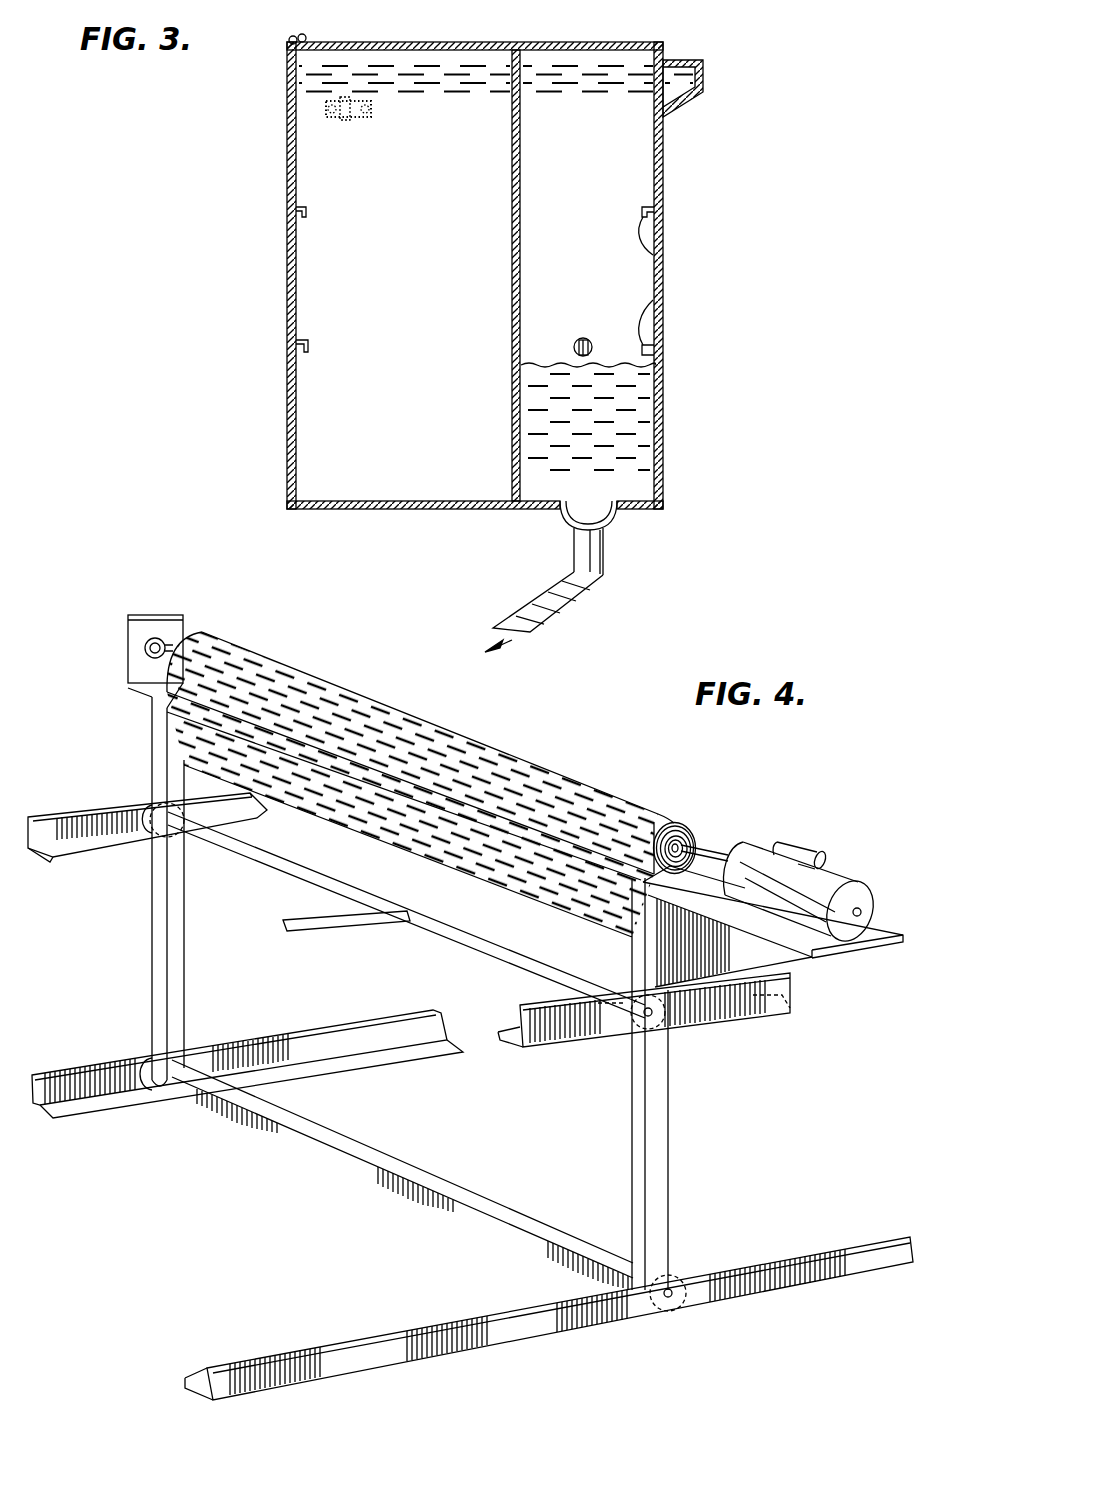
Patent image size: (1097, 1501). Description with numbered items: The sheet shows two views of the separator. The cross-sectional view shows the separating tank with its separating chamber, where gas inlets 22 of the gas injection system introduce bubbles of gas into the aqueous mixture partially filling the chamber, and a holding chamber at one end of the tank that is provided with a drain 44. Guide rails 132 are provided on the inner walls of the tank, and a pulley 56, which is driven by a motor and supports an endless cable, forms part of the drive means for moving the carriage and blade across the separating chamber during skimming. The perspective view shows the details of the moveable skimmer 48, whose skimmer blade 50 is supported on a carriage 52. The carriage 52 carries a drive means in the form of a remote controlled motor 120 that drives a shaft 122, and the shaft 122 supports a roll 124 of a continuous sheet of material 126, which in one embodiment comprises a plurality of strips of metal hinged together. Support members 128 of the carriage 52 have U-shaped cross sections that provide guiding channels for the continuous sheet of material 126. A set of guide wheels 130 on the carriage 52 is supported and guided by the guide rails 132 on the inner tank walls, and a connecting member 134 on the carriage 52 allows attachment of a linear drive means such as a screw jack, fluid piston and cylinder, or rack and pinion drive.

In FIG. 3, the gas inlet 22 is at (575, 351).
In FIG. 3, the drain 44 is at (587, 548).
In FIG. 4, the skimmer 48 is at (255, 1160).
In FIG. 4, the skimmer blade 50 is at (383, 834).
In FIG. 4, the carriage 52 is at (688, 1147).
In FIG. 3, the pulley 56 is at (344, 122).
In FIG. 4, the remote controlled motor 120 is at (828, 880).
In FIG. 4, the shaft 122 is at (703, 857).
In FIG. 4, the roll 124 is at (677, 820).
In FIG. 4, the continuous sheet of material 126 is at (494, 874).
In FIG. 4, the support member 128 is at (183, 953).
In FIG. 4, the guide wheel 130 is at (147, 832).
In FIG. 3, the guide rail 132 is at (648, 312).
In FIG. 4, the guide rail 132 is at (63, 847).
In FIG. 4, the connecting member 134 is at (311, 929).